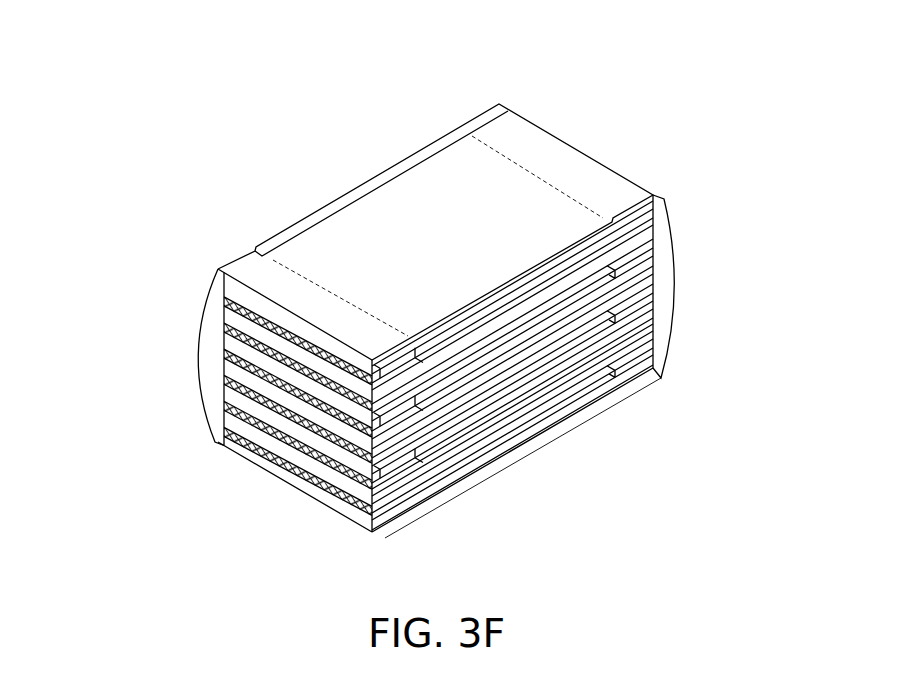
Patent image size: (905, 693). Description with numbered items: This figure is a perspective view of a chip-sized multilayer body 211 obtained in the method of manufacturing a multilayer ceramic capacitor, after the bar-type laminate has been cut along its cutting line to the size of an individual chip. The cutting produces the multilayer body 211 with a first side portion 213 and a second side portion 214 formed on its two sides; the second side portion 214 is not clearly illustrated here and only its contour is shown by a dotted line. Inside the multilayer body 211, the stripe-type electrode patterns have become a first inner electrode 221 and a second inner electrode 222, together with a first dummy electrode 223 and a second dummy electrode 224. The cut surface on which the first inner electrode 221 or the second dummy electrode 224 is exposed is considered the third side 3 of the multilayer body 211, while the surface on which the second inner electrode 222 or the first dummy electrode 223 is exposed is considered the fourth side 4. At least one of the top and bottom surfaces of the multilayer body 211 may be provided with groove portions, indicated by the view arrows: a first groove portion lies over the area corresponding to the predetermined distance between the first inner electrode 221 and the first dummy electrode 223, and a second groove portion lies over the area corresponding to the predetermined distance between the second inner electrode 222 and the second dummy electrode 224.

The third side 3 is at (231, 482).
The fourth side 4 is at (652, 158).
The multilayer body 211 is at (577, 170).
The first side portion 213 is at (212, 352).
The second side portion 214 is at (663, 290).
The first inner electrode 221 is at (323, 481).
The second inner electrode 222 is at (455, 432).
The first dummy electrode 223 is at (637, 355).
The second dummy electrode 224 is at (347, 470).